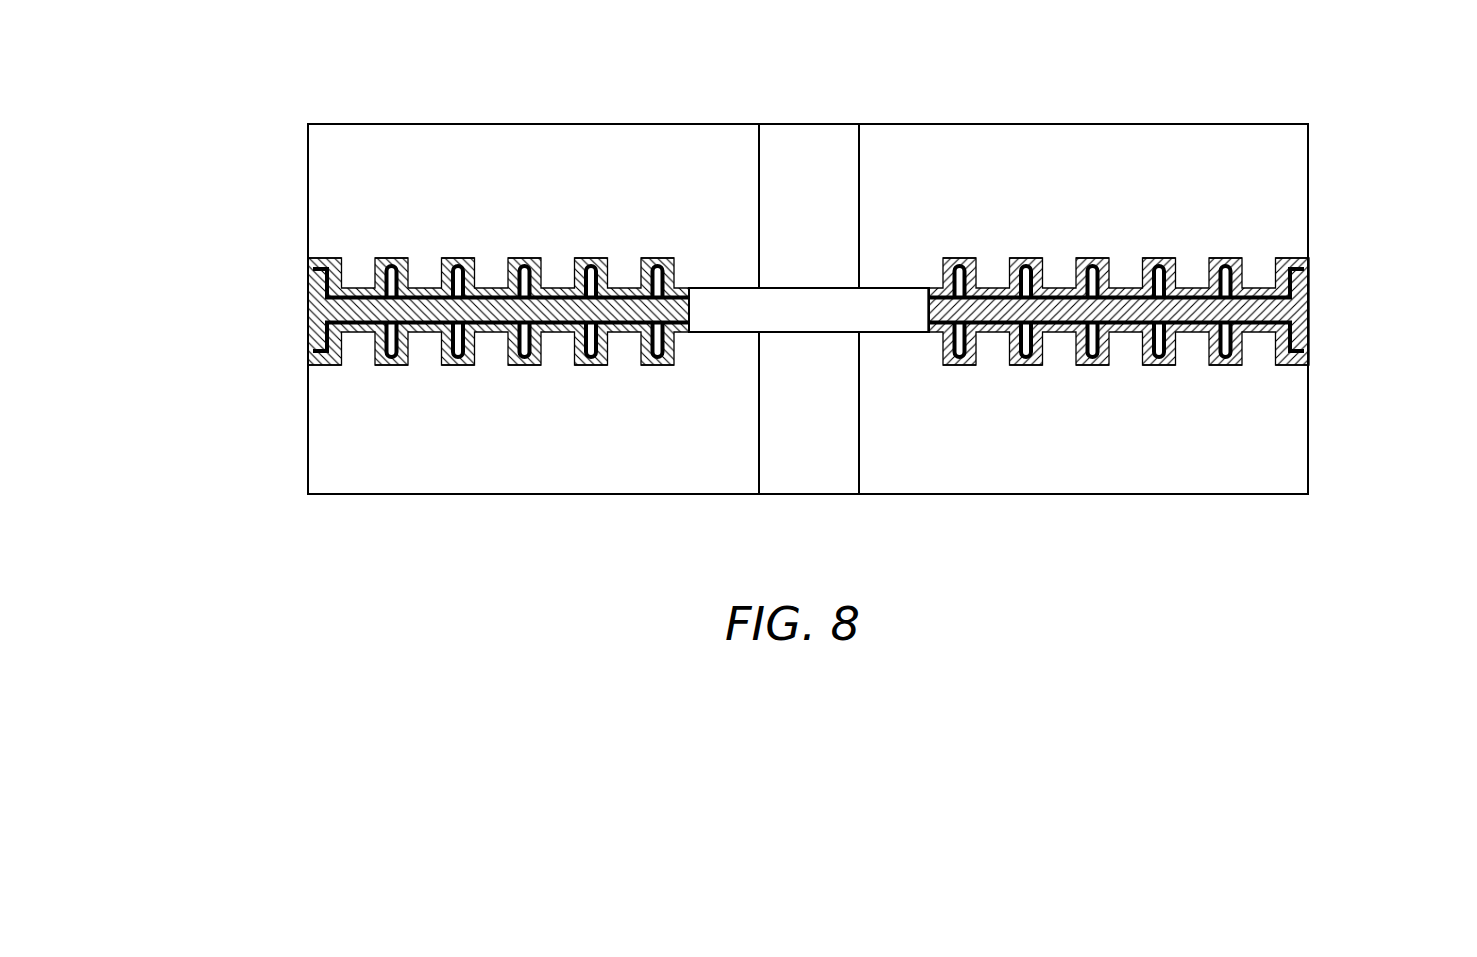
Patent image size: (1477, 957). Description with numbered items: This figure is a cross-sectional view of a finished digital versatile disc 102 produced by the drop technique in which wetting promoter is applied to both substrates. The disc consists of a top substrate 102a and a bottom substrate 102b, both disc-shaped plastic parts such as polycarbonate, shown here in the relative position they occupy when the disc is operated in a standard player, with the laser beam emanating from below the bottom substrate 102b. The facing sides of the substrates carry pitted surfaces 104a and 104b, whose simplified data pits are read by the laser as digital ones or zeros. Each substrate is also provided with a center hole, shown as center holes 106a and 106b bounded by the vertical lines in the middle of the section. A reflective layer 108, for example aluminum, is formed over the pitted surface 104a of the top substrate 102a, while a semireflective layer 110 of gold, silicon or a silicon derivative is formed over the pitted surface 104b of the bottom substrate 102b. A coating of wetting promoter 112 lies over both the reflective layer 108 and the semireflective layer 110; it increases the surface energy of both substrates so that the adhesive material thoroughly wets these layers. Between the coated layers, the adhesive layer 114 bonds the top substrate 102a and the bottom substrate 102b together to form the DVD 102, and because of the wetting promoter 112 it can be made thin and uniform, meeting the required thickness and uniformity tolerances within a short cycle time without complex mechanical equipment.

The digital versatile disc 102 is at (250, 115).
The top substrate 102a is at (1297, 163).
The bottom substrate 102b is at (1297, 408).
The pitted surface 104a is at (395, 262).
The pitted surface 104b is at (452, 363).
The upper gap region 106a is at (819, 139).
The lower gap region 106b is at (806, 479).
The reflective layer 108 is at (661, 258).
The semireflective layer 110 is at (673, 360).
The wetting promoter 112 is at (308, 264).
The adhesive layer 114 is at (308, 337).